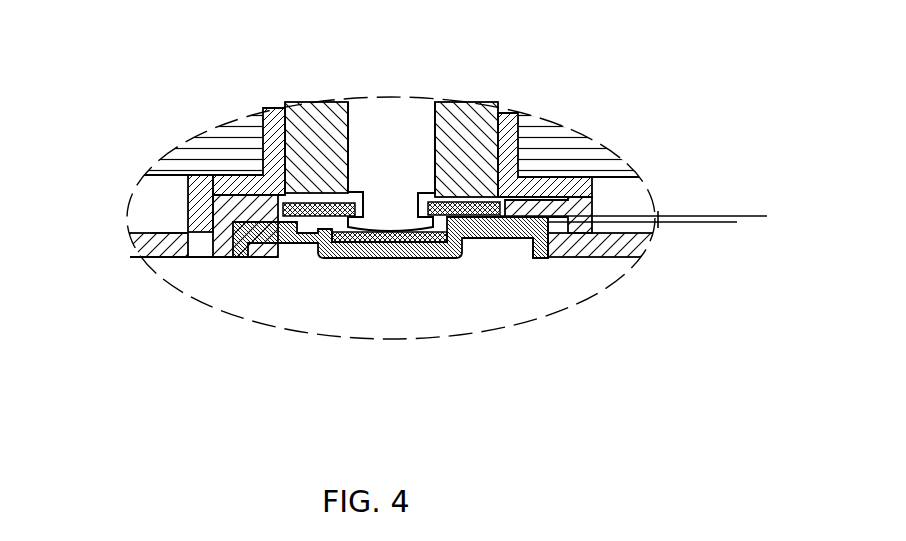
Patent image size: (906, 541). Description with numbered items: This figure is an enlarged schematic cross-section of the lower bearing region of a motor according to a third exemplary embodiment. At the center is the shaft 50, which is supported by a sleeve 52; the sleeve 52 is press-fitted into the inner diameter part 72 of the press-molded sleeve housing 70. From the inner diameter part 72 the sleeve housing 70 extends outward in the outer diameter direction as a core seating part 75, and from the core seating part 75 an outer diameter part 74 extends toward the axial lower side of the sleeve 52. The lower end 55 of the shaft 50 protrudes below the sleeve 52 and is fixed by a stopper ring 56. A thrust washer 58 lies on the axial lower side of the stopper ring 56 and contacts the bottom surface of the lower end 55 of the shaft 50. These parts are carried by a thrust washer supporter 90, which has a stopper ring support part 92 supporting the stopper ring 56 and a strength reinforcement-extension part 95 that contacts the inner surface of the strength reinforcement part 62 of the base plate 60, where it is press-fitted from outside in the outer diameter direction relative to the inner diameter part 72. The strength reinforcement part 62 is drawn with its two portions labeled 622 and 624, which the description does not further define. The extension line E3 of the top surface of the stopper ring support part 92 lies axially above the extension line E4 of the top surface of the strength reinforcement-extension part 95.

The shaft 50 is at (382, 104).
The sleeve 52 is at (322, 108).
The lower end 55 is at (392, 198).
The stopper ring 56 is at (508, 235).
The thrust washer 58 is at (377, 244).
The base plate 60 is at (143, 240).
The strength reinforcement part 62 is at (258, 402).
The bracket first portion 622 is at (182, 257).
The bracket second portion 624 is at (220, 256).
The sleeve housing 70 is at (210, 58).
The inner diameter part 72 is at (268, 122).
The outer diameter part 74 is at (194, 197).
The core seating part 75 is at (230, 174).
The thrust washer supporter 90 is at (427, 272).
The stopper ring support part 92 is at (478, 236).
The strength reinforcement-extension part 95 is at (257, 250).
The extension line of a top surface of the stopper ring support part E3 is at (648, 215).
The extension line of a top surface of the strength reinforcement-extension part E4 is at (656, 231).